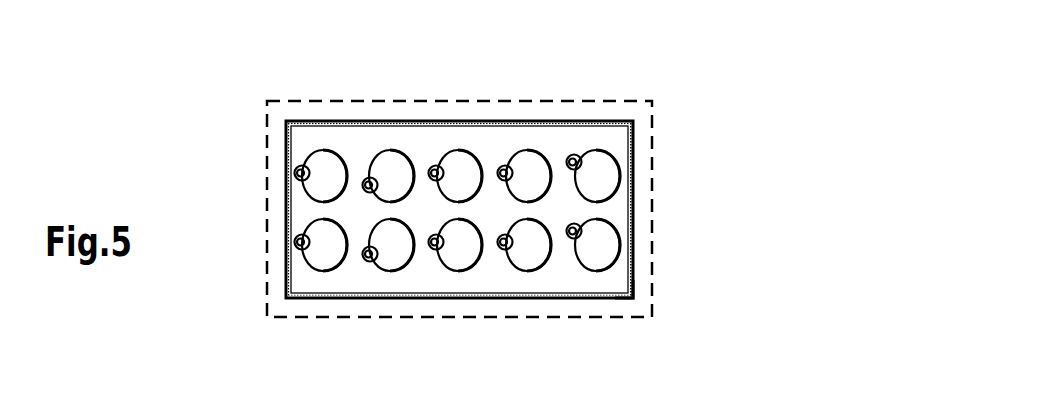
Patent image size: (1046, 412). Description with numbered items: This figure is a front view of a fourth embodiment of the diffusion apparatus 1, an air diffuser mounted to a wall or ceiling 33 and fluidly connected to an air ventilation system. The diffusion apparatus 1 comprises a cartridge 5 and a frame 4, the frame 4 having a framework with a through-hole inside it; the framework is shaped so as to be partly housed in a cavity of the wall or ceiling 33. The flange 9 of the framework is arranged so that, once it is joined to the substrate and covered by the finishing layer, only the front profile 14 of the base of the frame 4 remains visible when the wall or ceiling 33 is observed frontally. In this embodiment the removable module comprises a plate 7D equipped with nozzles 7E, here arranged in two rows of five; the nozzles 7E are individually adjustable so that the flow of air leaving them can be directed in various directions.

The diffusion apparatus 1 is at (241, 117).
The frame 4 is at (353, 111).
The cartridge 5 is at (337, 289).
The plate 7D is at (560, 137).
The nozzles 7E is at (323, 188).
The flange 9 is at (640, 307).
The front profile 14 is at (638, 263).
The wall or ceiling 33 is at (700, 229).